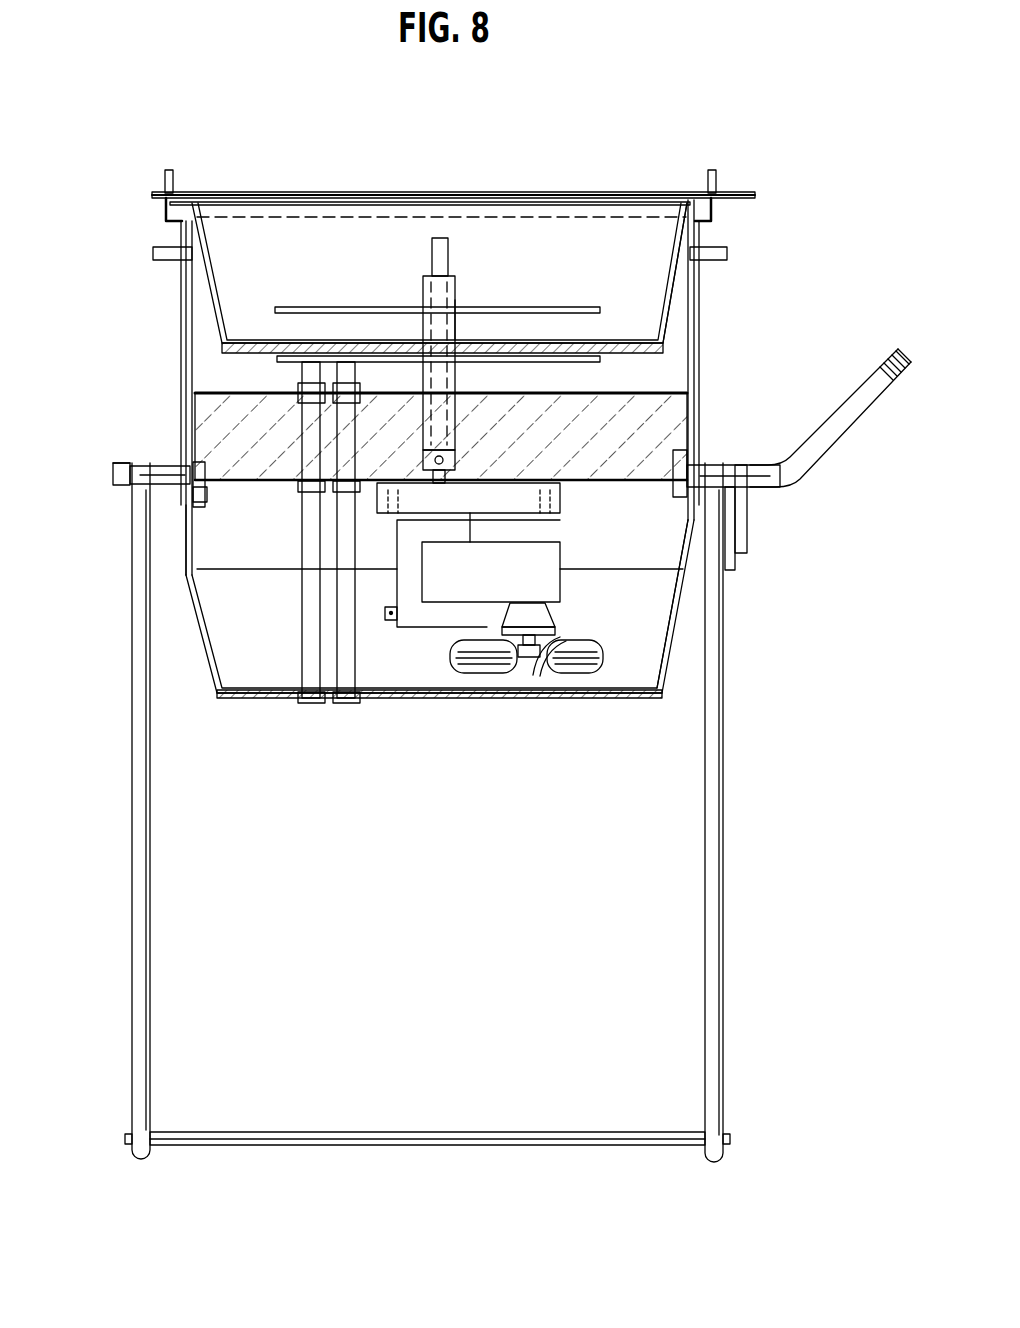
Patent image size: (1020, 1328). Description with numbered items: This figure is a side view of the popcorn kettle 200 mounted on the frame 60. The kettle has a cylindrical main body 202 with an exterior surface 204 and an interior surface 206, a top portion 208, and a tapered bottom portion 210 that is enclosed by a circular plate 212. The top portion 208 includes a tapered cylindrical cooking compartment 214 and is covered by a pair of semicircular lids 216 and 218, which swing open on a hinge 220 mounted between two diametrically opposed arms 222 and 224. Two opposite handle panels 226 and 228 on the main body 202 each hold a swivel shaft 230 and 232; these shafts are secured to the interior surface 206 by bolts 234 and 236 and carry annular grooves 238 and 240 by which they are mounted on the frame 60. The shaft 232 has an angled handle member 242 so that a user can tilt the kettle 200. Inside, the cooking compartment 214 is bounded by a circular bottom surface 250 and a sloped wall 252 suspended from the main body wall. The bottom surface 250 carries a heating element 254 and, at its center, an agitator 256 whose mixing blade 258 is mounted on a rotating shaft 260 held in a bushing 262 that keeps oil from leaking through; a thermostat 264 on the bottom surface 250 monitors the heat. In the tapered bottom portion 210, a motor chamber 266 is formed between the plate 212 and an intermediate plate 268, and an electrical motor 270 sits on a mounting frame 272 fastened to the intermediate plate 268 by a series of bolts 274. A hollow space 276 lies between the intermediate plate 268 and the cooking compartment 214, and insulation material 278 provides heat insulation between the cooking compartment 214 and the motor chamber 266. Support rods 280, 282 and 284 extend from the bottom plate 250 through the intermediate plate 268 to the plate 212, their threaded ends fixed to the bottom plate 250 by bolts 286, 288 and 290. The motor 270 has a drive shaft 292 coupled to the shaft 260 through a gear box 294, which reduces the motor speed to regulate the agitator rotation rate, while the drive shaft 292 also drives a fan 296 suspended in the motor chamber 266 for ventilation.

The frame 60 is at (725, 892).
The popcorn kettle 200 is at (450, 362).
The main body 202 is at (708, 332).
The exterior surface 204 is at (715, 405).
The interior surface 206 is at (657, 363).
The top portion 208 is at (203, 183).
The tapered bottom portion 210 is at (217, 675).
The circular plate 212 is at (490, 505).
The cooking compartment 214 is at (186, 222).
The semicircular lid 216 is at (262, 192).
The semicircular lid 218 is at (400, 192).
The hinge 220 is at (527, 192).
The arm 222 is at (715, 172).
The arm 224 is at (166, 178).
The handle panel 226 is at (180, 462).
The handle panel 228 is at (693, 467).
The swivel shaft 230 is at (113, 473).
The swivel shaft 232 is at (740, 497).
The bolt 234 is at (187, 537).
The bolt 236 is at (737, 557).
The annular groove 238 is at (130, 462).
The annular groove 240 is at (747, 487).
The angled handle member 242 is at (830, 442).
The bottom surface 250 is at (280, 358).
The sloped wall 252 is at (300, 385).
The heating element 254 is at (700, 392).
The agitator 256 is at (457, 245).
The mixing blade 258 is at (560, 315).
The rotating shaft 260 is at (430, 285).
The bushing 262 is at (478, 320).
The thermostat 264 is at (335, 386).
The motor chamber 266 is at (648, 665).
The intermediate plate 268 is at (380, 475).
The electrical motor 270 is at (422, 625).
The mounting frame 272 is at (302, 580).
The bolts 274 is at (290, 483).
The hollow space 276 is at (673, 410).
The insulation material 278 is at (555, 592).
The support rod 280 is at (338, 670).
The support rod 282 is at (355, 670).
The support rod 284 is at (672, 660).
The bolt 286 is at (300, 390).
The bolt 288 is at (153, 253).
The bolt 290 is at (650, 330).
The drive shaft 292 is at (450, 693).
The gear box 294 is at (605, 675).
The fan 296 is at (585, 672).